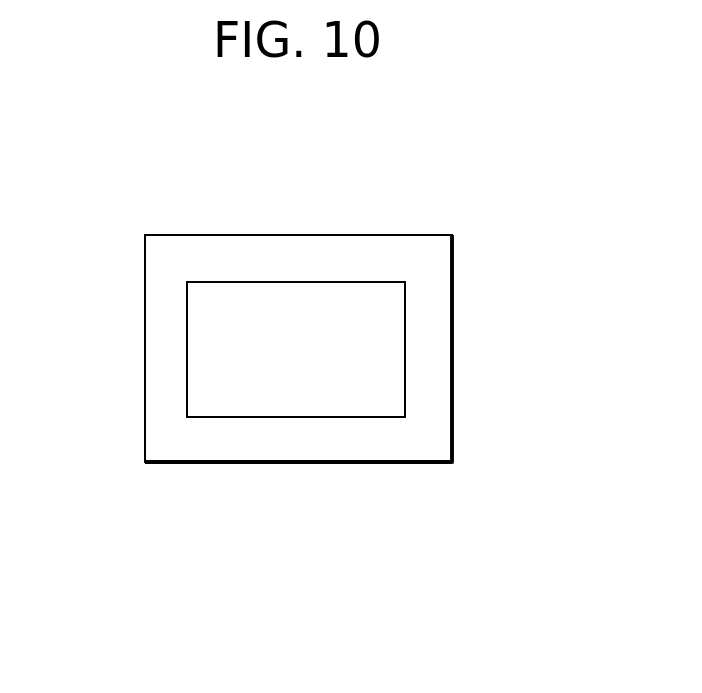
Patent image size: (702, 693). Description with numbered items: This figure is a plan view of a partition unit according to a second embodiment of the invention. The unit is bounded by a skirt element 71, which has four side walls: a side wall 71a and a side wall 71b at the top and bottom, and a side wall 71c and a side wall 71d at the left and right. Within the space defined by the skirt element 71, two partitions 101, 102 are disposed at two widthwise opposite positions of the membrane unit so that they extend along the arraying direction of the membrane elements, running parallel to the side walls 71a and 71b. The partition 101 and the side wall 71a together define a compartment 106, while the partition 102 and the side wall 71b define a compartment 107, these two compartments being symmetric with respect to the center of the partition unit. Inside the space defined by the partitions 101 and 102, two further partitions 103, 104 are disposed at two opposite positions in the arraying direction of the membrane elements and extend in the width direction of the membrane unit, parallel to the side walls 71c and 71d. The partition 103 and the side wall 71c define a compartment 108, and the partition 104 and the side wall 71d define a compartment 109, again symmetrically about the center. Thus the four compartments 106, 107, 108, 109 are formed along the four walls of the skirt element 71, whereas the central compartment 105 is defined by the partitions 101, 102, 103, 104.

The skirt element 71 is at (395, 232).
The side wall 71a is at (446, 235).
The side wall 71b is at (415, 462).
The side wall 71c is at (143, 403).
The side wall 71d is at (453, 397).
The partition 101 is at (315, 281).
The partition 102 is at (313, 417).
The partition 103 is at (186, 358).
The partition 104 is at (407, 352).
The compartment 105 is at (326, 362).
The compartment 106 is at (213, 255).
The compartment 107 is at (217, 451).
The compartment 108 is at (157, 305).
The compartment 109 is at (437, 308).